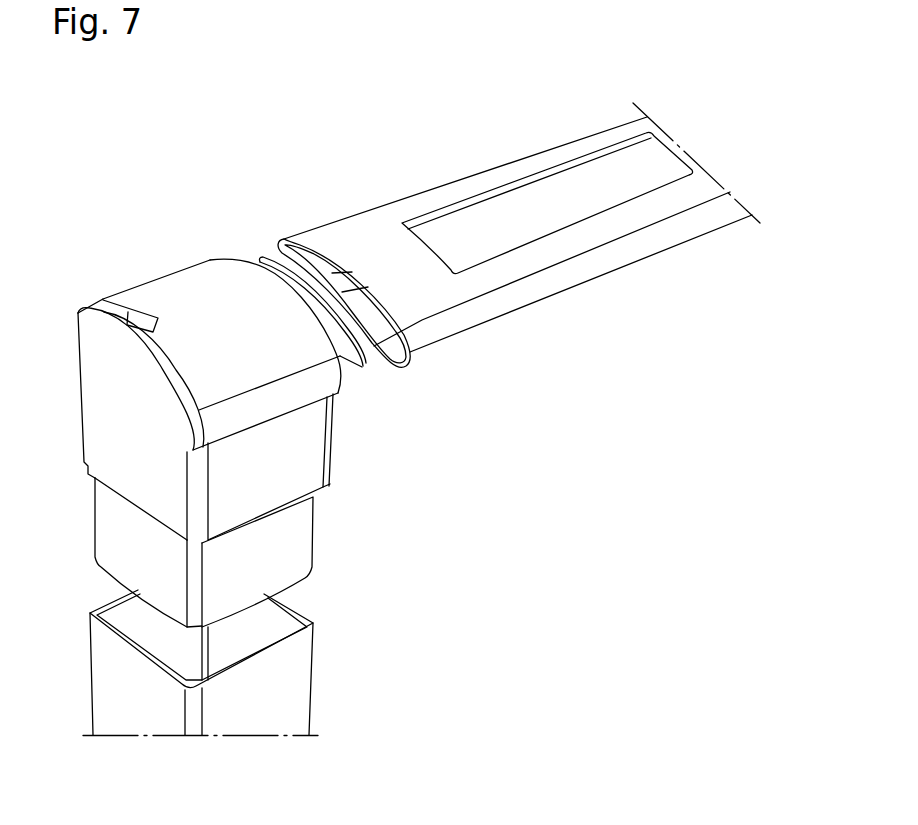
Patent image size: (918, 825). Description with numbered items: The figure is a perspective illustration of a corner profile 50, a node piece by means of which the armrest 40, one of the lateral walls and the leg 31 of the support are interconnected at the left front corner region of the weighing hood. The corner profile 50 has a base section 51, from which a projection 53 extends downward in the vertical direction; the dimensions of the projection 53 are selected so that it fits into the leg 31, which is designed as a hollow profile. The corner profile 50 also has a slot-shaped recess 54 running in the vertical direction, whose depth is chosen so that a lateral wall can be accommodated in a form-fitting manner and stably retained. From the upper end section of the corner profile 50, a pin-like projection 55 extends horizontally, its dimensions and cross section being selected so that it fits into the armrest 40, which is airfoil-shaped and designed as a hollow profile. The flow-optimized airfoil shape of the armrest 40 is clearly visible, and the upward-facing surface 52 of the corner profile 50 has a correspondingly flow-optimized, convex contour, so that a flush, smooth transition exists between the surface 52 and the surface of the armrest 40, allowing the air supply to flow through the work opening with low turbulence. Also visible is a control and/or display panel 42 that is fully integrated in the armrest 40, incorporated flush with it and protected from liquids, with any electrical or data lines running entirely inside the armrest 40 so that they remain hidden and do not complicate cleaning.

The leg 31 is at (293, 703).
The armrest 40 is at (519, 220).
The control and/or display panel 42 is at (543, 208).
The corner profile 50 is at (252, 435).
The base section 51 is at (297, 433).
The upward-facing surface 52 is at (243, 302).
The projection 53 is at (297, 562).
The slot-shaped recess 54 is at (103, 300).
The pin-like projection 55 is at (363, 368).